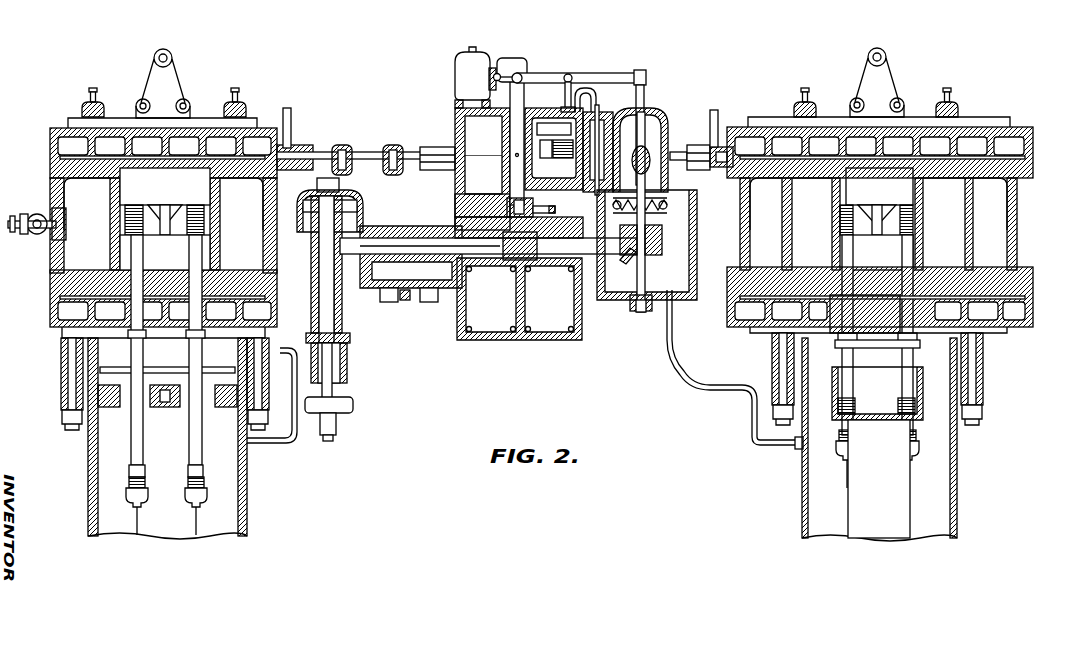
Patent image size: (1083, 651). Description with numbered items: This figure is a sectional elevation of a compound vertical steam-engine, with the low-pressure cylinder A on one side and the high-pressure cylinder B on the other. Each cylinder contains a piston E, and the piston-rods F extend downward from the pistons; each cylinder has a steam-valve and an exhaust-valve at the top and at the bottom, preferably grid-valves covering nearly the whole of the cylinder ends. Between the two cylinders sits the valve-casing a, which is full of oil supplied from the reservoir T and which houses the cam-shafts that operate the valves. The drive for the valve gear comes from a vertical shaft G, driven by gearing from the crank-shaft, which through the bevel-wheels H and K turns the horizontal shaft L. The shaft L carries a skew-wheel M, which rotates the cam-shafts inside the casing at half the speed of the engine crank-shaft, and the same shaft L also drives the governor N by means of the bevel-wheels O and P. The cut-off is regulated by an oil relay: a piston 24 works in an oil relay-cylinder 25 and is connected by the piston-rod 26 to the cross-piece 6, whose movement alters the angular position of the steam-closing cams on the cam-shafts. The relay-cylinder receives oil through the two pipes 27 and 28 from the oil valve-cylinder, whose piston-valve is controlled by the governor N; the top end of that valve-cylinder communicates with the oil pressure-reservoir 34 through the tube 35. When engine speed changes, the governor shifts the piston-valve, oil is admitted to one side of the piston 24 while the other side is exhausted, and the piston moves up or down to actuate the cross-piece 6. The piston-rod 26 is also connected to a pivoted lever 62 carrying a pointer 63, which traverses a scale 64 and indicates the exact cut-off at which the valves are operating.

The low-pressure cylinder A is at (1012, 215).
The high-pressure cylinder B is at (56, 194).
The piston E is at (150, 208).
The piston-rod F is at (192, 262).
The vertical shaft G is at (343, 352).
The bevel-wheel H is at (352, 192).
The bevel-wheel K is at (365, 212).
The horizontal shaft L is at (425, 250).
The skew-wheel M is at (515, 233).
The governor N is at (697, 209).
The bevel-wheel O is at (622, 251).
The bevel-wheel P is at (650, 222).
The reservoir T is at (455, 69).
The valve-casing a is at (456, 118).
The cross-piece 6 is at (531, 205).
The piston 24 is at (500, 155).
The oil relay-cylinder 25 is at (500, 175).
The piston-rod 26 is at (510, 201).
The pipe 27 is at (569, 150).
The pipe 28 is at (566, 175).
The oil pressure-reservoir 34 is at (521, 62).
The tube 35 is at (597, 110).
The pivoted lever 62 is at (589, 74).
The pointer 63 is at (500, 70).
The scale 64 is at (496, 68).